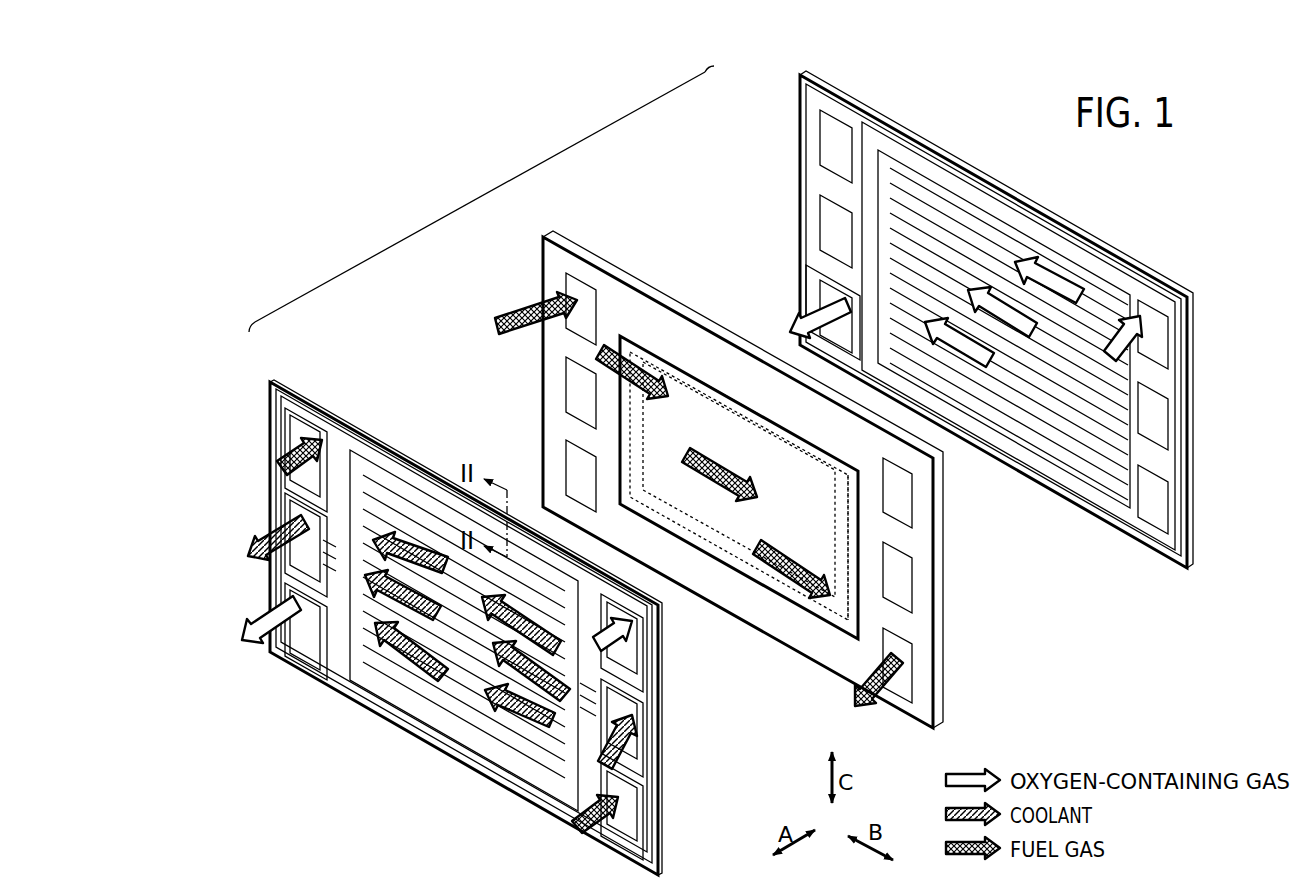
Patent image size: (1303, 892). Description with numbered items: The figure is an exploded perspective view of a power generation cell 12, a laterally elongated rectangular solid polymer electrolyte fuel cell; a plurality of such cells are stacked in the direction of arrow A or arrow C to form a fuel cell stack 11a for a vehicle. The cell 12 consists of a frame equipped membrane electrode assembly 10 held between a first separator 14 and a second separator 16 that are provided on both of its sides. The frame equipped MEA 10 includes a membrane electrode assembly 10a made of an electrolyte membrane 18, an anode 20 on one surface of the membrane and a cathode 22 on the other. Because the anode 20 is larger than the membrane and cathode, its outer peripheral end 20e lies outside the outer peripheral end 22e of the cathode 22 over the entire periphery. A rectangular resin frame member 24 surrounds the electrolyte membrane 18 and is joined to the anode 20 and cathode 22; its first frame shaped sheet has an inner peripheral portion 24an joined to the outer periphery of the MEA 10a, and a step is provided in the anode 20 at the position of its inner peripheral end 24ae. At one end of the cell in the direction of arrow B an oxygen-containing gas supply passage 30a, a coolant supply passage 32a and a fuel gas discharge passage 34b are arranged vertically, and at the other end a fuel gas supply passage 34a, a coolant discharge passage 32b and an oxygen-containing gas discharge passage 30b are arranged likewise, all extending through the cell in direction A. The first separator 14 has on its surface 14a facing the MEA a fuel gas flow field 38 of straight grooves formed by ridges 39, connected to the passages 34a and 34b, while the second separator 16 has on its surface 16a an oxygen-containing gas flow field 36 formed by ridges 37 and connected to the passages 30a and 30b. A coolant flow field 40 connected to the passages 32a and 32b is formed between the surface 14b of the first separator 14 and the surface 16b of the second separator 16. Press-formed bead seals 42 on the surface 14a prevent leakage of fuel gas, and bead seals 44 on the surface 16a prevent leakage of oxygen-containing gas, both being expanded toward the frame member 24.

The frame equipped membrane electrode assembly 10 is at (718, 457).
The membrane electrode assembly 10a is at (720, 555).
The fuel cell stack 11a is at (1186, 176).
The power generation cell 12 is at (490, 192).
The first separator 14 is at (454, 595).
The surface of the first separator 14a is at (290, 652).
The surface of the first separator 14b is at (307, 660).
The second separator 16 is at (940, 356).
The surface of the second separator 16a is at (1150, 538).
The surface of the second separator 16b is at (1166, 556).
The electrolyte membrane 18 is at (812, 536).
The anode 20 is at (623, 474).
The outer peripheral end of the anode 20e is at (618, 443).
The cathode 22 is at (846, 557).
The outer peripheral end of the cathode 22e is at (850, 573).
The frame member 24 is at (637, 297).
The inner peripheral end of the first frame shaped sheet 24ae is at (645, 428).
The inner peripheral portion of the first frame shaped sheet 24an is at (705, 403).
The oxygen-containing gas supply passage 30a is at (627, 657).
The oxygen-containing gas discharge passage 30b is at (295, 598).
The coolant supply passage 32a is at (627, 703).
The coolant discharge passage 32b is at (299, 510).
The fuel gas supply passage 34a is at (297, 445).
The fuel gas discharge passage 34b is at (627, 795).
The oxygen-containing gas flow field 36 is at (957, 223).
The ridges 37 is at (1057, 440).
The fuel gas flow field 38 is at (385, 493).
The ridges 39 is at (475, 723).
The coolant flow field 40 is at (398, 680).
The bead seals 42 is at (373, 460).
The bead seals 44 is at (826, 278).